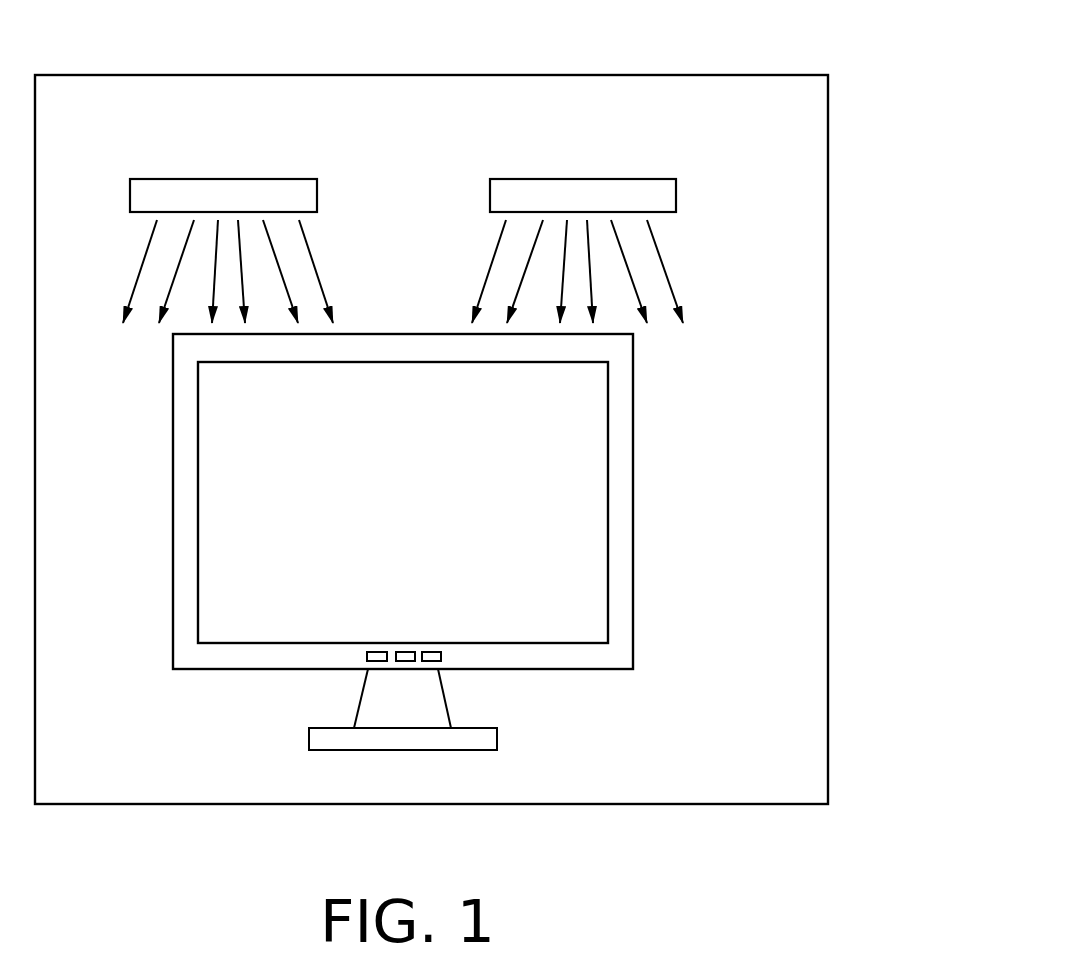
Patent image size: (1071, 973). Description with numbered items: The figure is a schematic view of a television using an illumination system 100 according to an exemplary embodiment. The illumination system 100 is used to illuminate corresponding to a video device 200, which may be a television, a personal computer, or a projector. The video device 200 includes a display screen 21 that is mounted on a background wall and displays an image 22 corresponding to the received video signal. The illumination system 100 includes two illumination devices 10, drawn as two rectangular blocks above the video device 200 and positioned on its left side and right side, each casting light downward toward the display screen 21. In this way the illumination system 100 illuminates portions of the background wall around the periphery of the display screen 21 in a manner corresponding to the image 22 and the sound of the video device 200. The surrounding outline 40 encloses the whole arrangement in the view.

The enclosure / housing 40 is at (647, 75).
The illumination system 100 is at (448, 213).
The illumination device 10 is at (657, 199).
The video device 200 is at (426, 542).
The display screen 21 is at (190, 502).
The image 22 is at (558, 570).